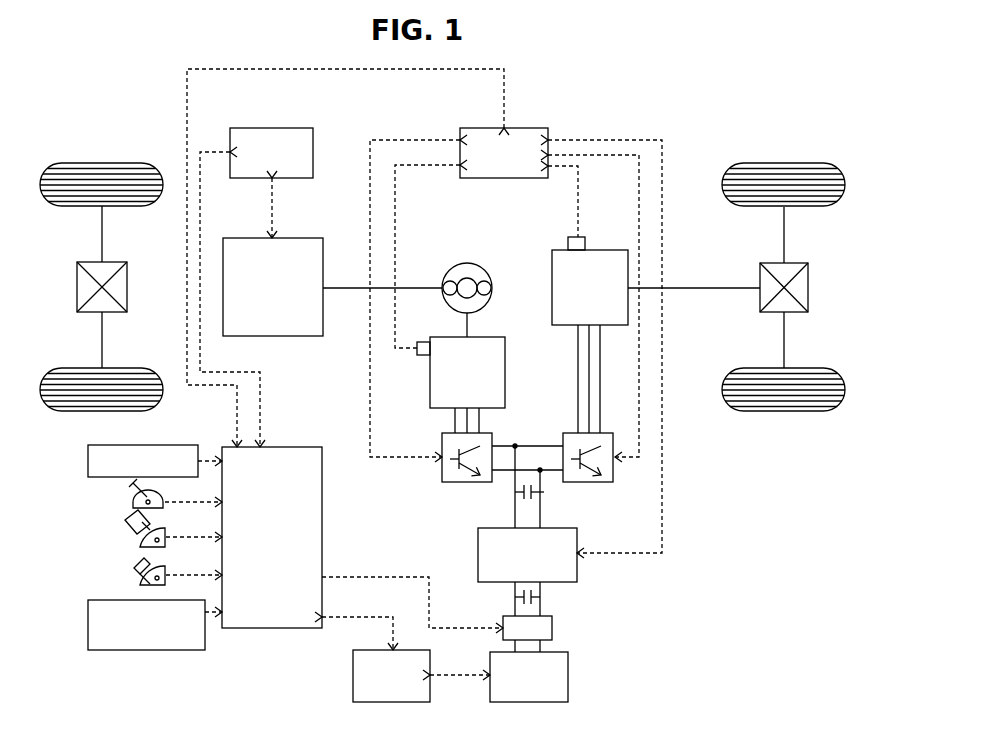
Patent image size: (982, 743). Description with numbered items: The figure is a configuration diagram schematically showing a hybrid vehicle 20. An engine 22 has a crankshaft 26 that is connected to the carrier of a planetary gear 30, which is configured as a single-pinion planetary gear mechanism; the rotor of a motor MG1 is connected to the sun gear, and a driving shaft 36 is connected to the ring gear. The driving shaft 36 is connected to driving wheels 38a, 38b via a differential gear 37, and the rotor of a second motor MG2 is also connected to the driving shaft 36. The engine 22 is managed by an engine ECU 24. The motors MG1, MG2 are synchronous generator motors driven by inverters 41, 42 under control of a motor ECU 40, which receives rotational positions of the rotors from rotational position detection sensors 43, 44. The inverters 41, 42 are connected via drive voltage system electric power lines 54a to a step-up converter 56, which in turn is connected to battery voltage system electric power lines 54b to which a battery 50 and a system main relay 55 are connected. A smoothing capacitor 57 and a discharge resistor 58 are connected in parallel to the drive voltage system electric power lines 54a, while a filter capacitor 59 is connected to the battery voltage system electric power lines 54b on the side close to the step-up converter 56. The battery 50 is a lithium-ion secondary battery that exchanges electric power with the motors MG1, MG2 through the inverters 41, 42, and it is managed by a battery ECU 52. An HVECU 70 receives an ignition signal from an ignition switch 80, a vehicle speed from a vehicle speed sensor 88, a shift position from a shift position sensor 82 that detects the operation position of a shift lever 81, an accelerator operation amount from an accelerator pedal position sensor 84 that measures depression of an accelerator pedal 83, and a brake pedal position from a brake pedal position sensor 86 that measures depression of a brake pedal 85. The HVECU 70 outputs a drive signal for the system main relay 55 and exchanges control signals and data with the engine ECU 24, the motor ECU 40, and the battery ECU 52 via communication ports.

The hybrid vehicle 20 is at (580, 91).
The engine 22 is at (296, 238).
The engine ECU 24 is at (272, 128).
The crankshaft 26 is at (424, 285).
The planetary gear 30 is at (465, 263).
The motor MG1 is at (498, 337).
The motor MG2 is at (552, 260).
The driving shaft 36 is at (717, 286).
The differential gear 37 is at (794, 262).
The driving wheel 38a is at (783, 162).
The driving wheel 38b is at (786, 411).
The motor ECU 40 is at (514, 128).
The inverter 41 is at (492, 436).
The inverter 42 is at (606, 433).
The rotational position detection sensor 43 is at (420, 342).
The rotational position detection sensor 44 is at (574, 236).
The battery 50 is at (570, 675).
The battery ECU 52 is at (353, 672).
The drive voltage system electric power lines 54a is at (515, 521).
The battery voltage system electric power lines 54b is at (540, 607).
The system main relay 55 is at (553, 627).
The step-up converter 56 is at (580, 541).
The smoothing capacitor 57 is at (515, 491).
The discharge resistor 58 is at (544, 492).
The filter capacitor 59 is at (515, 597).
The HVECU 70 is at (245, 630).
The ignition switch 80 is at (88, 462).
The shift lever 81 is at (128, 482).
The shift position sensor 82 is at (133, 502).
The accelerator pedal 83 is at (125, 521).
The accelerator pedal position sensor 84 is at (140, 541).
The brake pedal 85 is at (133, 562).
The brake pedal position sensor 86 is at (140, 579).
The vehicle speed sensor 88 is at (88, 612).